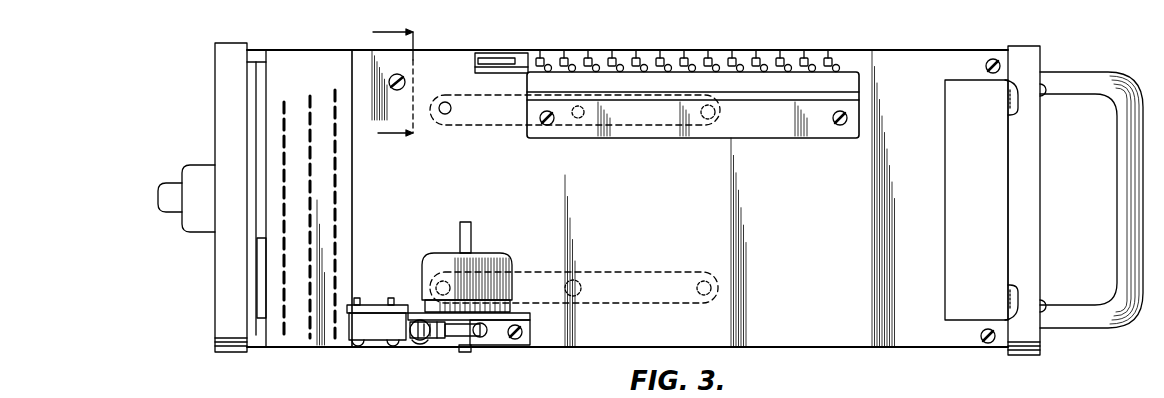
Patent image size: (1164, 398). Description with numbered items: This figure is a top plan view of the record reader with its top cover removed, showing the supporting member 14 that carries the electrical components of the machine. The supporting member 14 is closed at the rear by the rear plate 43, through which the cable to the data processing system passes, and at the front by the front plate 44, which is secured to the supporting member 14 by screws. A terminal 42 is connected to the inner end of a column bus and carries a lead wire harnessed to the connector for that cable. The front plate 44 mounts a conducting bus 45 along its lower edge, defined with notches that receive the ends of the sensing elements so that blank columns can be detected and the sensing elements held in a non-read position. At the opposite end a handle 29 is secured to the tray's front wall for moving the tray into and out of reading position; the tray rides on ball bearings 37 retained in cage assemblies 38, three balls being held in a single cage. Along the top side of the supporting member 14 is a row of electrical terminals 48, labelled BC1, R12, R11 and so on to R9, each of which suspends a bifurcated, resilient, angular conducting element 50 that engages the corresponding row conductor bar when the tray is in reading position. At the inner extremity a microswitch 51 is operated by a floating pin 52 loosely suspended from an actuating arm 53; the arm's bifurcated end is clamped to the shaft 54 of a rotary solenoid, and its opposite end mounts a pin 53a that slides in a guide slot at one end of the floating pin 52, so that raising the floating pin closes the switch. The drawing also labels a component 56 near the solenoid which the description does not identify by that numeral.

The supporting member 14 is at (930, 58).
The handle 29 is at (1118, 329).
The ball bearings 37 is at (445, 115).
The cage assemblies 38 is at (482, 125).
The electrical terminal 42 is at (340, 342).
The rear plate 43 is at (214, 281).
The front plate 44 is at (1028, 230).
The conducting bus 45 is at (1012, 332).
The electrical terminals 48 is at (712, 50).
The conducting element 50 is at (526, 60).
The microswitch 51 is at (370, 320).
The floating pin 52 is at (415, 350).
The actuating arm 53 is at (450, 337).
The pin 53a is at (425, 340).
The shaft 54 is at (466, 352).
The motor 56 is at (487, 262).